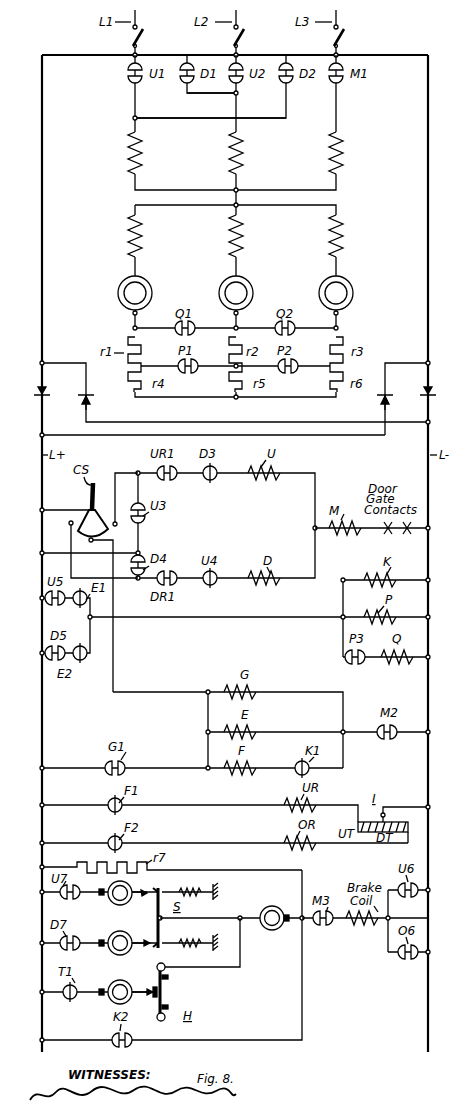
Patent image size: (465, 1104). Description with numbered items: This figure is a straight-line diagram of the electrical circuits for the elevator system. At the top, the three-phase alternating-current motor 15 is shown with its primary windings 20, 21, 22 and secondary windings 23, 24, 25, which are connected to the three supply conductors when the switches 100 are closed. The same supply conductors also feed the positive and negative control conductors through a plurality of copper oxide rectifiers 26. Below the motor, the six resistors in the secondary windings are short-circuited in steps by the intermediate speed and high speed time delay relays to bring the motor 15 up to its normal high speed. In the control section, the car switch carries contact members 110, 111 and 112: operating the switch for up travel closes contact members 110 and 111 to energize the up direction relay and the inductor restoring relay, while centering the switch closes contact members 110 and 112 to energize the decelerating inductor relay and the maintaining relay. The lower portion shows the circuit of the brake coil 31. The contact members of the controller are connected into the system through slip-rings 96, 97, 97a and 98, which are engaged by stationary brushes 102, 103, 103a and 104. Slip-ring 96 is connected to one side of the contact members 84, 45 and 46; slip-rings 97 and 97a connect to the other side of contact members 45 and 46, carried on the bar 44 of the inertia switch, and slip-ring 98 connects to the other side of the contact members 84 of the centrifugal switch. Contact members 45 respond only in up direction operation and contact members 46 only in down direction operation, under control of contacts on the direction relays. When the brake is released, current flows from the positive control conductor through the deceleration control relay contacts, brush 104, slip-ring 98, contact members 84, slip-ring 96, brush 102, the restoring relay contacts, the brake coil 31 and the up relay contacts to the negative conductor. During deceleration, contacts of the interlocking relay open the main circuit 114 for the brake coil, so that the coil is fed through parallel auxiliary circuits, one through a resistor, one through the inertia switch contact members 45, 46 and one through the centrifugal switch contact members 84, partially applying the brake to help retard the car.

The switches 100 is at (140, 41).
The motor 15 is at (187, 110).
The primary winding 20 is at (128, 164).
The primary winding 21 is at (229, 162).
The primary winding 22 is at (329, 162).
The secondary winding 23 is at (128, 243).
The secondary winding 24 is at (229, 243).
The secondary winding 25 is at (329, 243).
The copper oxide rectifiers 26 is at (439, 390).
The contact members 110 is at (83, 522).
The contact members 111 is at (117, 520).
The contact members 112 is at (89, 546).
The stationary brush 103 is at (108, 902).
The stationary brush 103a is at (108, 938).
The slip-ring 97 is at (143, 898).
The slip-ring 97a is at (145, 937).
The contact members 45 is at (155, 891).
The contact members 46 is at (156, 945).
The switch bar 44 is at (162, 931).
The contact members 84 is at (156, 986).
The slip-ring 98 is at (123, 982).
The stationary brush 104 is at (108, 1003).
The slip-ring 96 is at (276, 906).
The stationary brush 102 is at (290, 933).
The brake coil 31 is at (372, 928).
The main circuit 114 is at (303, 1007).